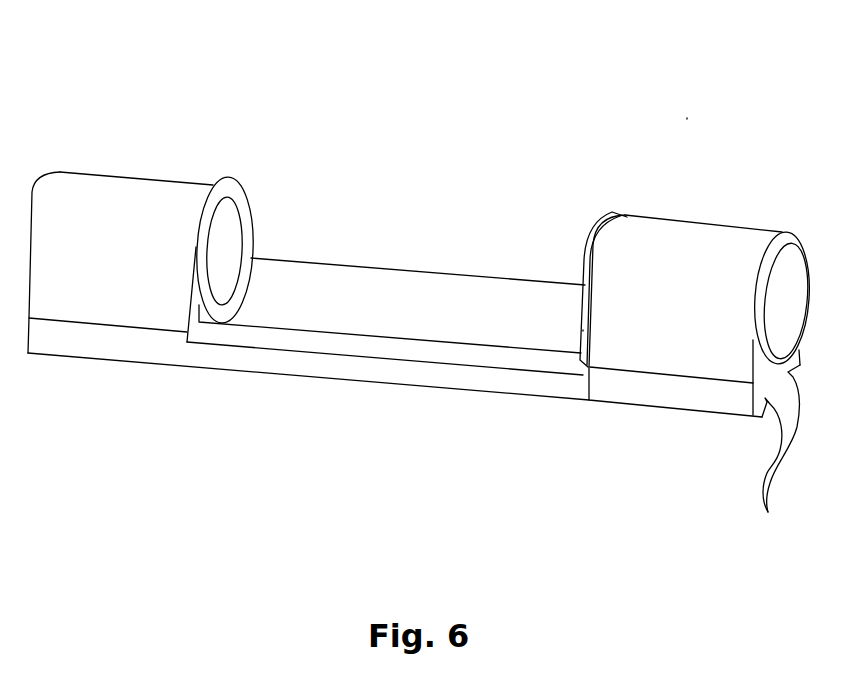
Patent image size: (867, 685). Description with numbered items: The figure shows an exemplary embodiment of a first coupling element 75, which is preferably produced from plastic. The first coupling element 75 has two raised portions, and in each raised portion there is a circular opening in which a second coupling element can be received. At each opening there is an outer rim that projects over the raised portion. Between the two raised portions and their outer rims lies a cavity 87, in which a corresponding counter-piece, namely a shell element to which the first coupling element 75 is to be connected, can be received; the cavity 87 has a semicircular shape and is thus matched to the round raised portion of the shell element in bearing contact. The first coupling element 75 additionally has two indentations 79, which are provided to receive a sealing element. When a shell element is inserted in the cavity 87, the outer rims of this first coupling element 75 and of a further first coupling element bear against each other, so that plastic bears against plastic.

The first coupling element 75 is at (689, 115).
The indentation 79 is at (781, 453).
The cavity 87 is at (367, 290).